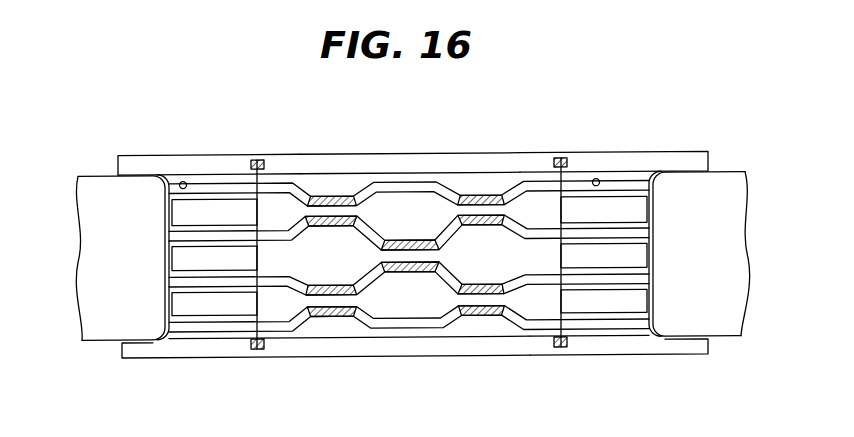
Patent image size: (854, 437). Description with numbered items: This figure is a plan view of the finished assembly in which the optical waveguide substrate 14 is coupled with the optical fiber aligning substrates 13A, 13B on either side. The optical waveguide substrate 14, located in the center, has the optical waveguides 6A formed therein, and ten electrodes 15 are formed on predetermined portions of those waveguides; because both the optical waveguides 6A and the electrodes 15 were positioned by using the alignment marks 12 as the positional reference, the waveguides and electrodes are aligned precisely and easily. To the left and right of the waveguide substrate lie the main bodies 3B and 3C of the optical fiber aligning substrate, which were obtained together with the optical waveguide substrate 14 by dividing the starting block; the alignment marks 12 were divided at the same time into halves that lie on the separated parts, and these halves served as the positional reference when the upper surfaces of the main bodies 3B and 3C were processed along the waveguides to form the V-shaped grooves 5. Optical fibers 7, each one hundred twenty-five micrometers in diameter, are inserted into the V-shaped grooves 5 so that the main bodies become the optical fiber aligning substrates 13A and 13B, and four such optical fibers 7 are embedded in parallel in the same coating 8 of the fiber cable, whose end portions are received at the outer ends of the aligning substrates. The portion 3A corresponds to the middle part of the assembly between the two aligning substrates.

The coating 8 is at (100, 187).
The V-shaped groove 5 is at (181, 179).
The optical fiber aligning substrate 13A is at (222, 150).
The optical fiber aligning substrate 13B is at (649, 150).
The optical waveguide substrate 14 is at (450, 150).
The alignment mark 12 is at (258, 161).
The electrode 15 is at (342, 196).
The optical waveguide 6A is at (365, 283).
The optical fiber 7 is at (213, 281).
The base plate (center section) 3A is at (433, 353).
The main body of the optical fiber aligning substrate 3B is at (235, 353).
The main body of the optical fiber aligning substrate 3C is at (640, 352).